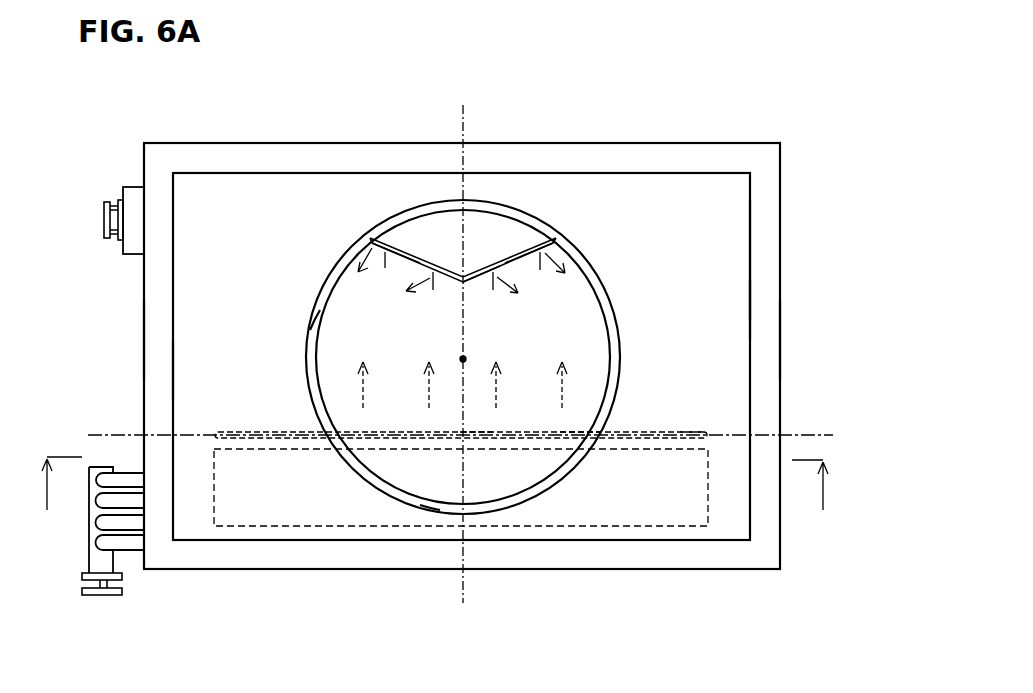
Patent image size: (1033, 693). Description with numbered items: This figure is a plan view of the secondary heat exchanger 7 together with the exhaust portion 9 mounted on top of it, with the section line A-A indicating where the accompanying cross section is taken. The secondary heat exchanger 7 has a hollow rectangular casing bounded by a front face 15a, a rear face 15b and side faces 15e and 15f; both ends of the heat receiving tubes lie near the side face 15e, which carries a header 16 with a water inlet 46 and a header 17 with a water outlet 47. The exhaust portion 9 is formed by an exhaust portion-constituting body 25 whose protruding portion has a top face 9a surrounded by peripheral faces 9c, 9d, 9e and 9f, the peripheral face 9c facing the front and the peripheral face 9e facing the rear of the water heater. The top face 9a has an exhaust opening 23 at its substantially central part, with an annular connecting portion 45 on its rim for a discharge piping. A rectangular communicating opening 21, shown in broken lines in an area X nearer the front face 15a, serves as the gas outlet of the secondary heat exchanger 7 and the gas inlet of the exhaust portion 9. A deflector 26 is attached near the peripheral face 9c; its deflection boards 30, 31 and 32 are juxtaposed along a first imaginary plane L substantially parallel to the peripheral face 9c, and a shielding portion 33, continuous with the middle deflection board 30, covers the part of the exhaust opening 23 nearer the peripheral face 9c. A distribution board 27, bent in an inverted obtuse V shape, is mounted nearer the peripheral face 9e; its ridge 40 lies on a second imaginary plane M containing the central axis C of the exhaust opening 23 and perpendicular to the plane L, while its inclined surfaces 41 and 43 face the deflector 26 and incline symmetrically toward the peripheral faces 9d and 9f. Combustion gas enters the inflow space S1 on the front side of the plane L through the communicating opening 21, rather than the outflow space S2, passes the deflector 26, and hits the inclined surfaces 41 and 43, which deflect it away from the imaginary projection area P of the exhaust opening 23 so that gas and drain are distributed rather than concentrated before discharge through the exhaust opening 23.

The secondary heat exchanger 7 is at (514, 319).
The exhaust portion 9 is at (765, 142).
The top face 9a is at (292, 190).
The peripheral face 9c is at (610, 541).
The peripheral face 9d is at (750, 320).
The peripheral face 9e is at (565, 173).
The peripheral face 9f is at (173, 372).
The front face 15a is at (352, 569).
The rear face 15b is at (375, 143).
The side face 15e is at (144, 343).
The side face 15f is at (780, 349).
The header 16 is at (134, 254).
The header 17 is at (96, 565).
The communicating opening 21 is at (655, 513).
The exhaust opening 23 is at (577, 307).
The exhaust portion-constituting body 25 is at (736, 260).
The deflector 26 is at (474, 433).
The distribution board 27 is at (481, 275).
The deflection board 30 is at (577, 432).
The deflection board 31 is at (688, 432).
The deflection board 32 is at (216, 433).
The shielding portion 33 is at (436, 484).
The ridge 40 is at (463, 284).
The inclined surface 41 is at (510, 265).
The inclined surface 43 is at (405, 264).
The connecting portion 45 is at (316, 331).
The water inlet 46 is at (109, 240).
The water outlet 47 is at (108, 595).
The line A- A is at (434, 498).
The central axis C is at (472, 360).
The first imaginary plane L is at (471, 436).
The second imaginary plane M is at (463, 342).
The projection area P is at (372, 340).
The inflow space S1 is at (740, 494).
The outflow space S2 is at (698, 306).
The area X is at (734, 530).